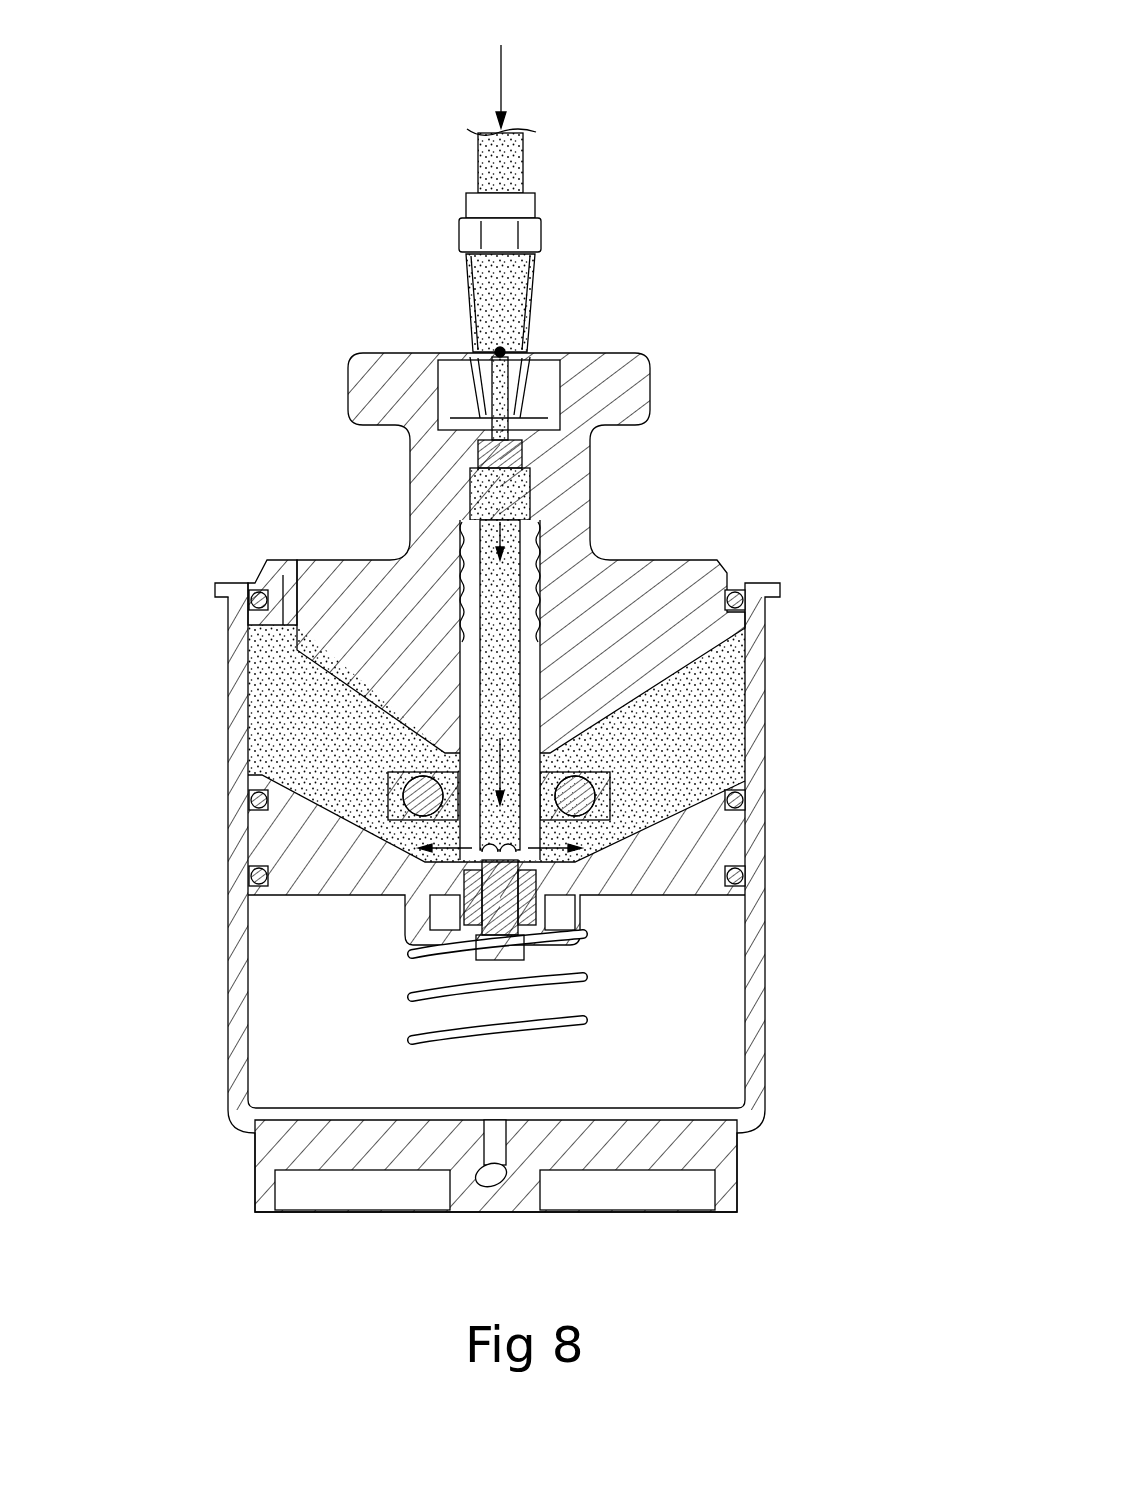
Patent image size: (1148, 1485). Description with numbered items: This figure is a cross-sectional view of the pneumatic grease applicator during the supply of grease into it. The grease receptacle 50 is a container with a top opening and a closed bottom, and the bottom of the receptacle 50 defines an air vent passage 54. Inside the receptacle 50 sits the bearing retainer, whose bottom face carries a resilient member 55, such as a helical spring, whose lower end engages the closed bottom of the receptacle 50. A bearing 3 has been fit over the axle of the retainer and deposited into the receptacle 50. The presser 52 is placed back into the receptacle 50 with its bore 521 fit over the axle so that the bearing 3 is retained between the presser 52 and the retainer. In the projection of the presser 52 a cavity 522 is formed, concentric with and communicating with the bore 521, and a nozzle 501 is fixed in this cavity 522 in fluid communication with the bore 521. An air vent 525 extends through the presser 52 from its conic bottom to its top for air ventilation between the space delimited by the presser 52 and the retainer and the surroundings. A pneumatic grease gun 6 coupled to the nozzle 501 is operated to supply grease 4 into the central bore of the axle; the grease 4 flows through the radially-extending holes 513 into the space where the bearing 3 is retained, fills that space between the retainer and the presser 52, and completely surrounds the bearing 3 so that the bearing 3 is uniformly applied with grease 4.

The pneumatic grease gun 6 is at (540, 290).
The nozzle 501 is at (517, 377).
The bore 521 is at (507, 497).
The presser 52 is at (647, 560).
The cavity 522 is at (460, 400).
The air vent 525 is at (275, 568).
The bearing 3 is at (600, 770).
The radially-extending holes 513 is at (565, 830).
The grease 4 is at (530, 855).
The resilient member 55 is at (583, 975).
The grease receptacle 50 is at (752, 1025).
The air vent passage 54 is at (503, 1182).